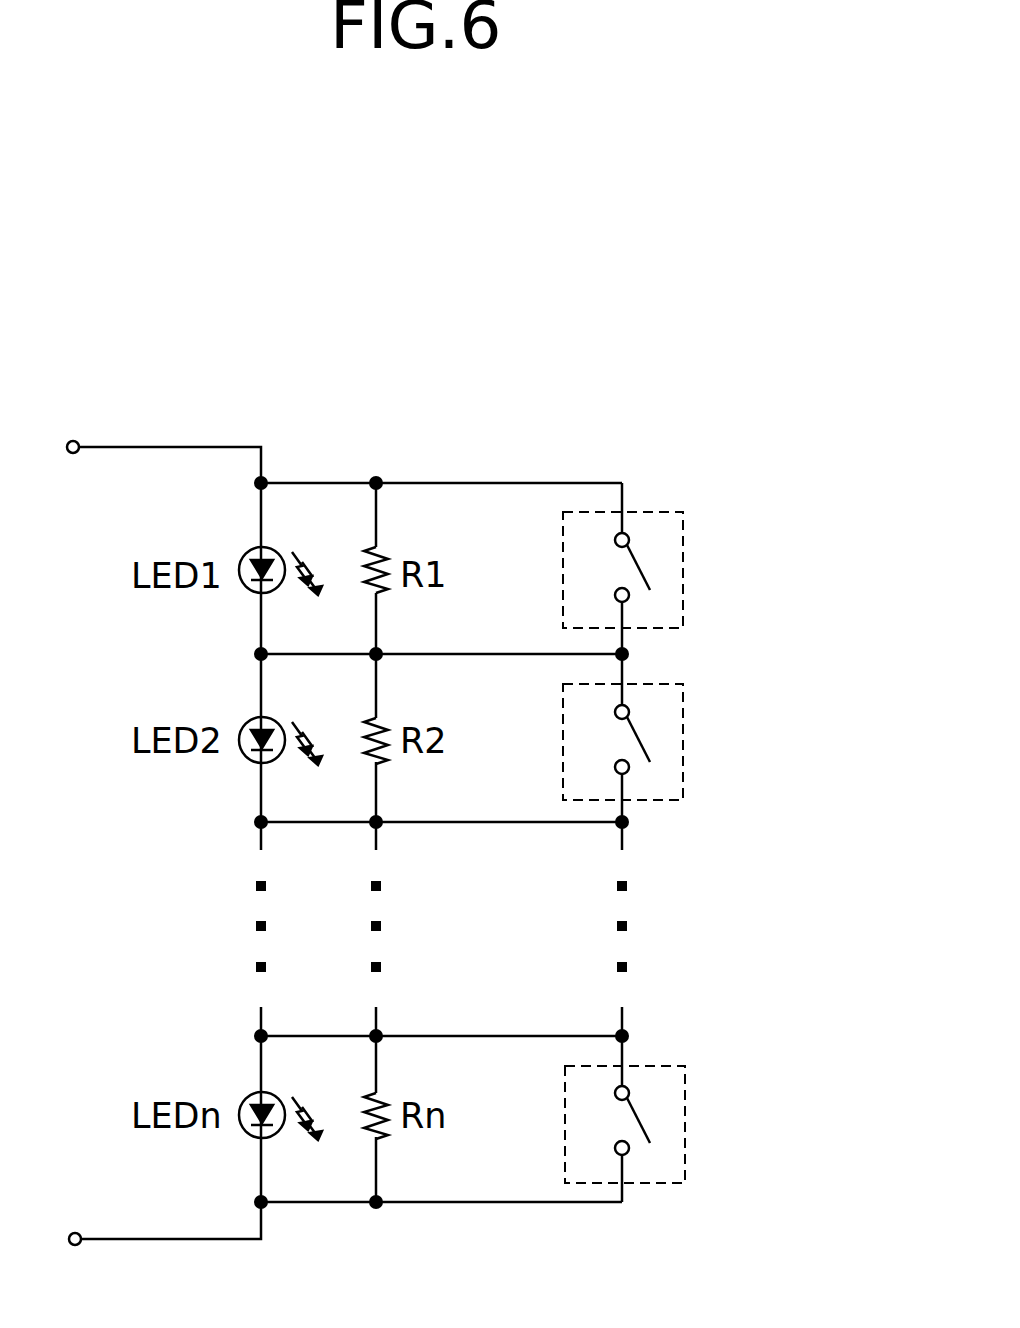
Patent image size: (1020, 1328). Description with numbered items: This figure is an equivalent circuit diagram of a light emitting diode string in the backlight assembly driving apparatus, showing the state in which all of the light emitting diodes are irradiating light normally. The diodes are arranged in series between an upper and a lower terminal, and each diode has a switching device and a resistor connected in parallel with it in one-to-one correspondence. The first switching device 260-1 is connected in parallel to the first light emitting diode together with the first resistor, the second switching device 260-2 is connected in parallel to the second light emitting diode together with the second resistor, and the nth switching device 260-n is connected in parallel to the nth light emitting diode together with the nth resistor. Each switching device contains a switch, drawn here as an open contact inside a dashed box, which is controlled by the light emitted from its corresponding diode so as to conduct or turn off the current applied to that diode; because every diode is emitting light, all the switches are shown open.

The first switching device 260-1 is at (683, 576).
The second switching device 260-2 is at (683, 748).
The nth switching device 260-n is at (685, 1128).